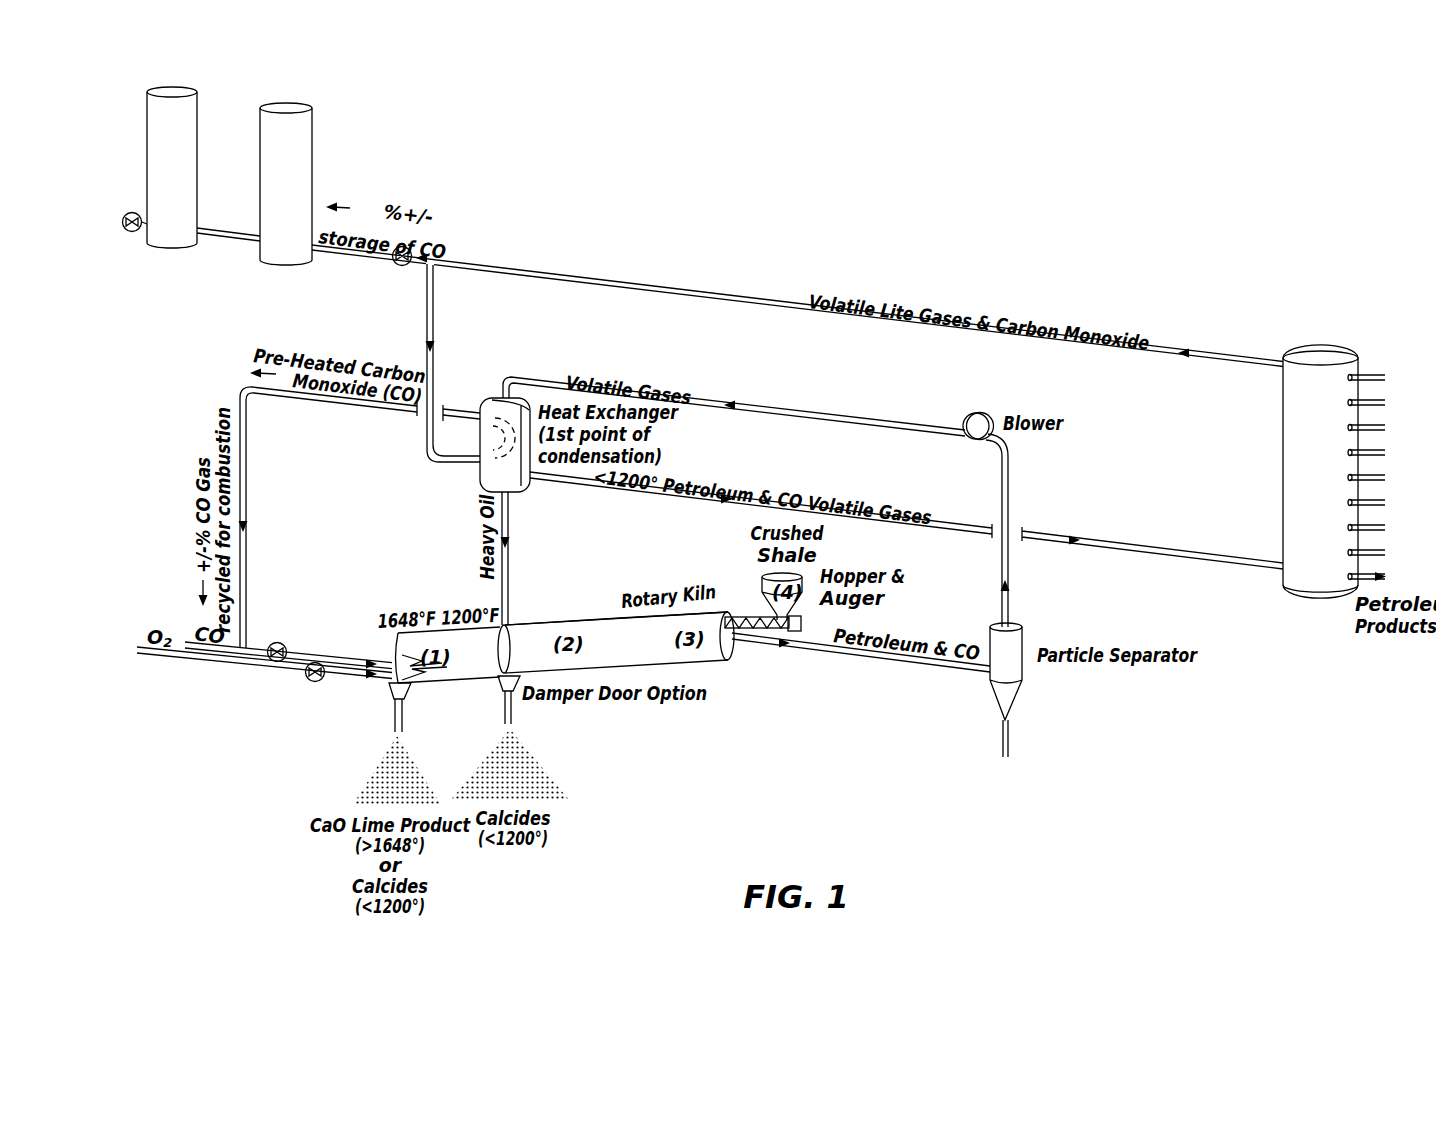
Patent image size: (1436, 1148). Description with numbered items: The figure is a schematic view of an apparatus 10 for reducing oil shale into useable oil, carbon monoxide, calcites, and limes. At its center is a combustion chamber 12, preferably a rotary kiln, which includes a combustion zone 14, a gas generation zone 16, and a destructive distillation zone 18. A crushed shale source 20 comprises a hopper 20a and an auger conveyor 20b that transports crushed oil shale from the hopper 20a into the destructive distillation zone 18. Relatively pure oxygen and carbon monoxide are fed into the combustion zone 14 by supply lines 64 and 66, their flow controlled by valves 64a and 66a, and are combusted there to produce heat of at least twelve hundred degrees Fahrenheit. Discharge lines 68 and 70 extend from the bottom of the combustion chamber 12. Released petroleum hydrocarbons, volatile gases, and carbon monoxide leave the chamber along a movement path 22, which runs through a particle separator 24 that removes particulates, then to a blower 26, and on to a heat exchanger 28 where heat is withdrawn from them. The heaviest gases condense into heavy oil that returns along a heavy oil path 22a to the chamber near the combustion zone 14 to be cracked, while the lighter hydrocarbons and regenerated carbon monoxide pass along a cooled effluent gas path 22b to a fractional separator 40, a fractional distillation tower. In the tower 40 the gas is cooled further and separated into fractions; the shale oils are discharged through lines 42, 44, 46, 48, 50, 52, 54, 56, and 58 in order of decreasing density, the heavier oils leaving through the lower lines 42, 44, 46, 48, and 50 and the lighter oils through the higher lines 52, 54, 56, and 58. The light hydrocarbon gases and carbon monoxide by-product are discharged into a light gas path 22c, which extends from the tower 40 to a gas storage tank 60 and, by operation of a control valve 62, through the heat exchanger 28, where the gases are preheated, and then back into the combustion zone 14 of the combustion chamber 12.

The apparatus 10 is at (857, 148).
The combustion chamber 12 is at (670, 665).
The combustion zone 14 is at (395, 656).
The gas generation zone 16 is at (545, 648).
The destructive distillation zone 18 is at (700, 650).
The crushed shale source 20 is at (771, 574).
The hopper 20a is at (800, 580).
The auger conveyor 20b is at (740, 617).
The movement path 22 is at (815, 410).
The heavy oil path 22a is at (510, 548).
The cooled effluent gas path 22b is at (935, 521).
The light gas path 22c is at (427, 290).
The particle separator 24 is at (1025, 672).
The blower 26 is at (990, 413).
The heat exchanger 28 is at (527, 490).
The fractional separator 40 is at (1325, 345).
The discharge line 42 is at (1383, 576).
The discharge line 44 is at (1383, 552).
The discharge line 46 is at (1383, 527).
The discharge line 48 is at (1383, 502).
The discharge line 50 is at (1383, 477).
The discharge line 52 is at (1383, 452).
The discharge line 54 is at (1383, 427).
The discharge line 56 is at (1383, 402).
The discharge line 58 is at (1383, 377).
The gas storage tank 60 is at (313, 173).
The control valve 62 is at (395, 265).
The oxygen supply line 64 is at (160, 662).
The oxygen valve 64a is at (315, 683).
The carbon monoxide supply line 66 is at (188, 640).
The carbon monoxide valve 66a is at (280, 641).
The discharge line 68 is at (395, 715).
The discharge line 70 is at (515, 710).